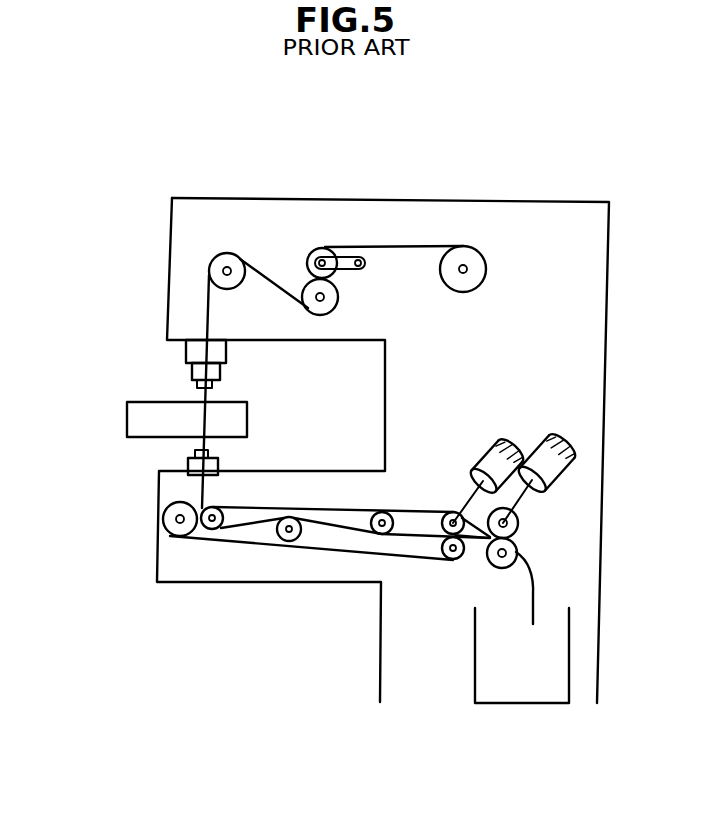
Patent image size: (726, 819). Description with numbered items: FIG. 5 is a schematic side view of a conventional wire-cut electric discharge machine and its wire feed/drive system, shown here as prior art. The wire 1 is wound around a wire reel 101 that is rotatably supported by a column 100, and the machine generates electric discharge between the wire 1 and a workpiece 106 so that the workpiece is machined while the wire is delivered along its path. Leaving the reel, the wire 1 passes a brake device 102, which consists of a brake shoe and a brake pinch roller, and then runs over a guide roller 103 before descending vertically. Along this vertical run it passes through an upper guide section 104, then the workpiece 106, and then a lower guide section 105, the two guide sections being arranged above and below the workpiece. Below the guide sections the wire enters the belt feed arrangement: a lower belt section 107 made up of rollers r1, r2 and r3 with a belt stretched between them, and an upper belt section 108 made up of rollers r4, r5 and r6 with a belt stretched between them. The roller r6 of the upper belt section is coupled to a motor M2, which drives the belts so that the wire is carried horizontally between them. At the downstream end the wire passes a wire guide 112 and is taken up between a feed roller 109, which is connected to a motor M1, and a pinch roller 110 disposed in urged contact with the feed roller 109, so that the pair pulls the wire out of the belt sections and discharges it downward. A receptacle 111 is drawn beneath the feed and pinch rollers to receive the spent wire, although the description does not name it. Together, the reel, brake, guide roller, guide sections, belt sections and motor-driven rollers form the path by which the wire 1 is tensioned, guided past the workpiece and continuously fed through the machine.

The wire 1 is at (392, 246).
The column 100 is at (559, 230).
The wire reel 101 is at (468, 258).
The brake device 102 is at (327, 232).
The guide roller 103 is at (223, 253).
The upper guide section 104 is at (188, 371).
The lower guide section 105 is at (188, 463).
The workpiece 106 is at (143, 418).
The lower belt section 107 is at (246, 551).
The upper belt section 108 is at (313, 496).
The feed roller 109 is at (515, 520).
The pinch roller 110 is at (517, 557).
The receiving tray 111 is at (518, 705).
The wire guide 112 is at (477, 546).
The roller r1 is at (173, 528).
The roller r2 is at (289, 541).
The roller r3 is at (455, 560).
The roller r4 is at (218, 506).
The roller r5 is at (395, 508).
The roller r6 is at (456, 511).
The motor M1 is at (547, 453).
The motor M2 is at (493, 450).